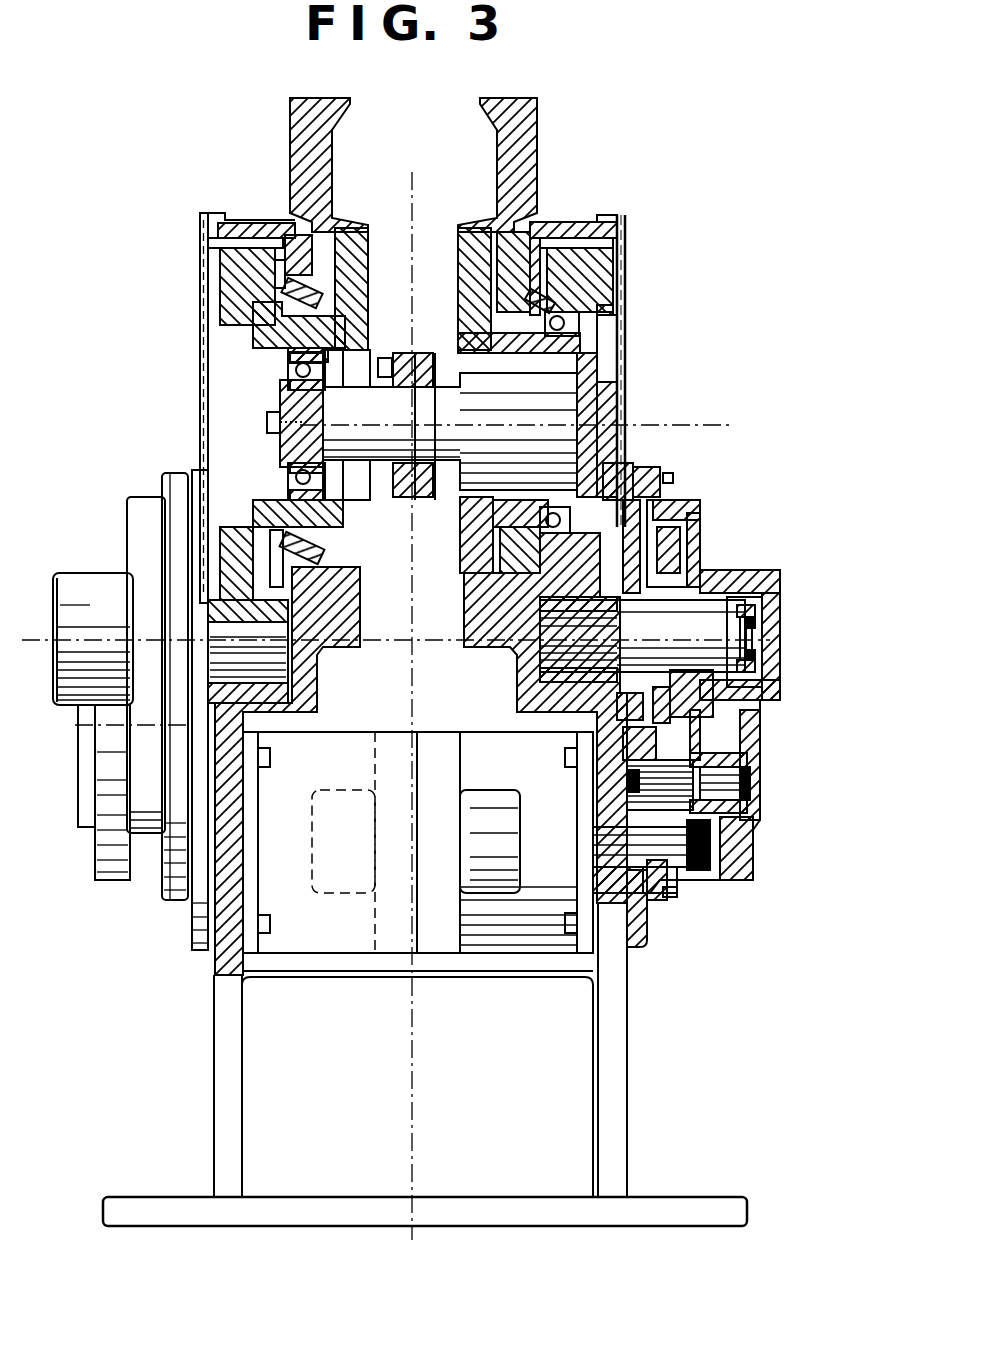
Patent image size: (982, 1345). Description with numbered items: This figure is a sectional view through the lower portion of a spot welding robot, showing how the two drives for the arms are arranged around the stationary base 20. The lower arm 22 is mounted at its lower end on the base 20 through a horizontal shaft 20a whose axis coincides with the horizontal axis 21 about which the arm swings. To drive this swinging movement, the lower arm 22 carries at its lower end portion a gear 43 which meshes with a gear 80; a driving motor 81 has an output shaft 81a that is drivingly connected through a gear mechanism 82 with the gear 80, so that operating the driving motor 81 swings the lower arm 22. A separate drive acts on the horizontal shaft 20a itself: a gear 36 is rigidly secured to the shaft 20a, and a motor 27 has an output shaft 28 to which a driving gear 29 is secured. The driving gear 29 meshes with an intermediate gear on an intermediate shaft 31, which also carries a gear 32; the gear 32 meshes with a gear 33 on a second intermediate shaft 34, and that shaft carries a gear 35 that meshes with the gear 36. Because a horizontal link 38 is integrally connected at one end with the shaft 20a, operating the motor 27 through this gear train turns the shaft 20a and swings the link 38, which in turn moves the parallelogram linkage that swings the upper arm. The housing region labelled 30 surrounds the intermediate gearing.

The stationary base 20 is at (612, 1080).
The horizontal shaft 20a is at (558, 383).
The horizontal axis 21 is at (648, 427).
The lower arm 22 is at (497, 138).
The motor 27 is at (503, 920).
The output shaft 28 is at (685, 878).
The driving gear 29 is at (720, 850).
The housing 30 is at (740, 730).
The intermediate shaft 31 is at (747, 778).
The gear 32 is at (747, 800).
The gear 33 is at (675, 555).
The second intermediate shaft 34 is at (777, 632).
The gear 35 is at (642, 639).
The gear 36 is at (583, 268).
The horizontal link 38 is at (420, 360).
The gear 43 is at (220, 266).
The gear 80 is at (250, 590).
The driving motor 81 is at (335, 915).
The output shaft 81a is at (243, 822).
The gear mechanism 82 is at (130, 837).